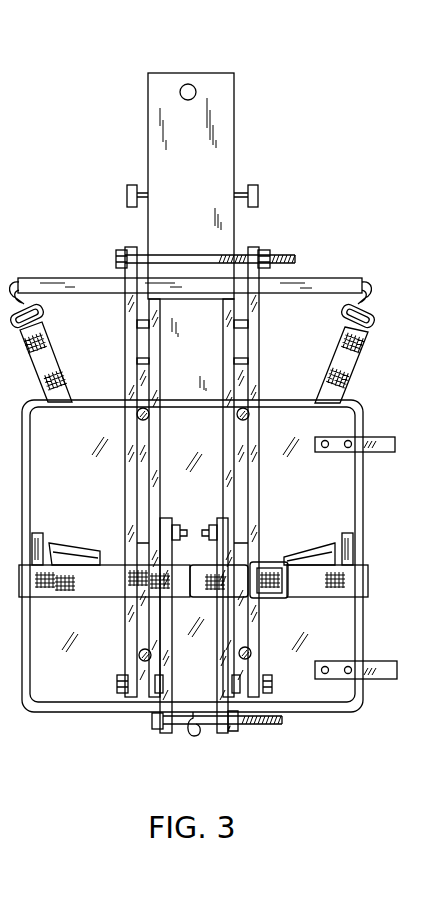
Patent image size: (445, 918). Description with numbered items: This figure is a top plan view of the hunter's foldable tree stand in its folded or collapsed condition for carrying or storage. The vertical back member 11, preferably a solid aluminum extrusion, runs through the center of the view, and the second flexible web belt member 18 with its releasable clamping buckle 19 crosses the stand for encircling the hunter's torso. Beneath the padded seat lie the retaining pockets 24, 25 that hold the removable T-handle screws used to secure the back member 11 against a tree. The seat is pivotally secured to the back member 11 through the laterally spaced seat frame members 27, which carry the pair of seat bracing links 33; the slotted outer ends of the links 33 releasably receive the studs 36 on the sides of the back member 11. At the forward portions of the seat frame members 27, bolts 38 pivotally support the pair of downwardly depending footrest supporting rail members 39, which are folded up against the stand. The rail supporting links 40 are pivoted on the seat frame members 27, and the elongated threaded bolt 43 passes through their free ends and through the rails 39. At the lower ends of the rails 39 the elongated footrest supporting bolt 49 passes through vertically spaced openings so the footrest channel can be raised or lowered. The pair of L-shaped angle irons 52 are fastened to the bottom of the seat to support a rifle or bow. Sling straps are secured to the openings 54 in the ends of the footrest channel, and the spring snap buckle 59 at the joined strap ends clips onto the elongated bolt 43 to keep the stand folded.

The vertical back member 11 is at (197, 229).
The second flexible web belt member 18 is at (98, 590).
The releasable clamping buckle 19 is at (288, 592).
The retaining pocket 24 is at (68, 560).
The retaining pocket 25 is at (315, 560).
The seat frame members 27 is at (242, 452).
The seat bracing links 33 is at (230, 378).
The stud 36 is at (127, 190).
The bolts 38 is at (117, 684).
The footrest supporting rail members 39 is at (128, 368).
The rail supporting links 40 is at (218, 518).
The elongated threaded bolt 43 is at (278, 728).
The footrest supporting bolt 49 is at (285, 256).
The L-shaped angle irons 52 is at (388, 452).
The openings 54 is at (355, 256).
The spring snap buckle 59 is at (203, 738).